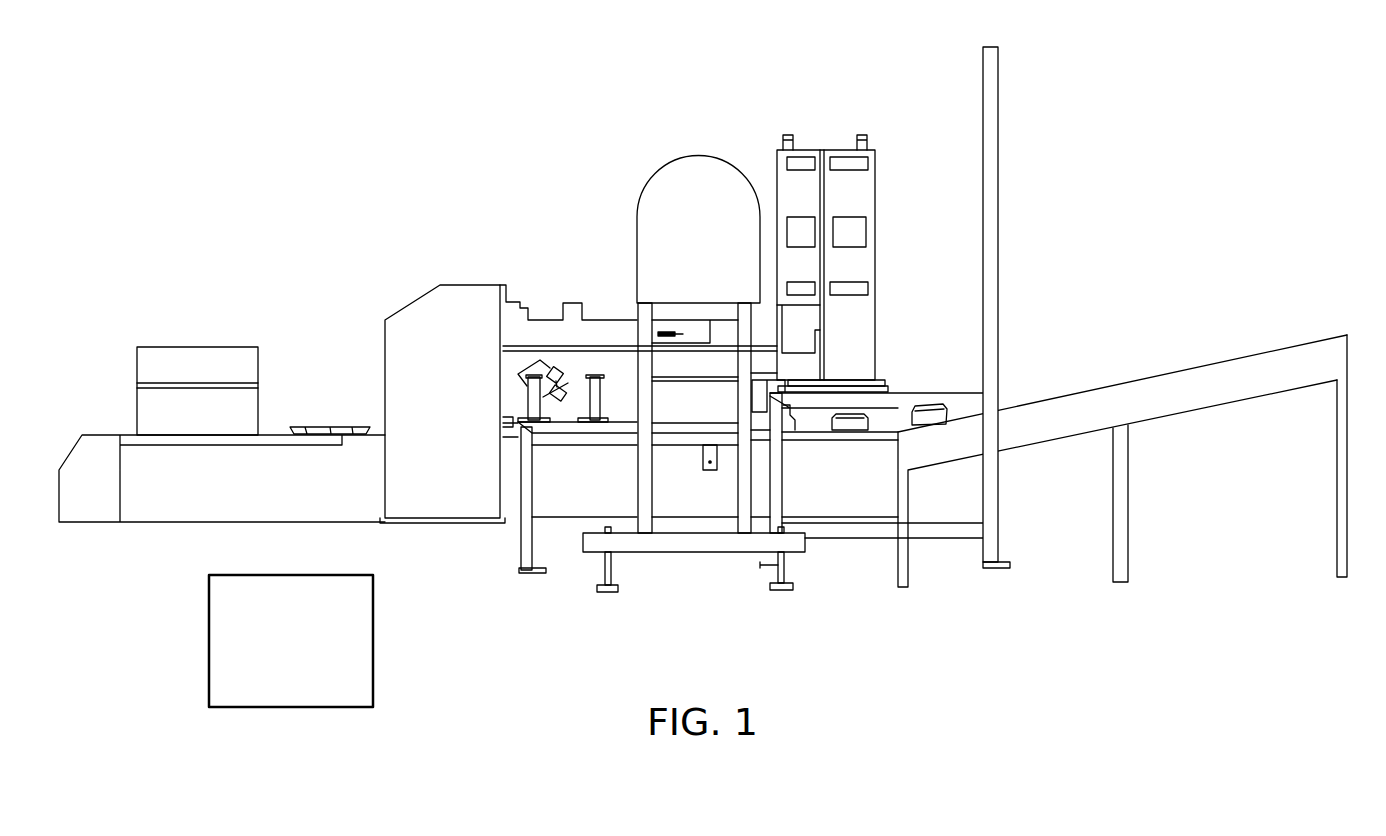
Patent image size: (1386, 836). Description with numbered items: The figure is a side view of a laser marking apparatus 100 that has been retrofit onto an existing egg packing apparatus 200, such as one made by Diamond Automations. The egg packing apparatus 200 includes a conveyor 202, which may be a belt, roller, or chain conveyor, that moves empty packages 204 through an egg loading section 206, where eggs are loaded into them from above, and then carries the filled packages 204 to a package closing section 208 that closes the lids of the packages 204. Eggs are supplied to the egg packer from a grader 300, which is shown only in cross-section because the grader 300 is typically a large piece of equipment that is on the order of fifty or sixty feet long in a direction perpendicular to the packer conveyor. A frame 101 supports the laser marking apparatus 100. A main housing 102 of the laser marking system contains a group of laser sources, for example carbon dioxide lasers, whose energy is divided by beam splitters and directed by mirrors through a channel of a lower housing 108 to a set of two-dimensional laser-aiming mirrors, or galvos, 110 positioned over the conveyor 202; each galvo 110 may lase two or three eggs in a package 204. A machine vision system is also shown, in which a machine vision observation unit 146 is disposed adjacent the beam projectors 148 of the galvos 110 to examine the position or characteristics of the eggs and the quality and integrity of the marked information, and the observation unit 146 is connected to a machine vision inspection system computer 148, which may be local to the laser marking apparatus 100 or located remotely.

The laser marking apparatus 100 is at (855, 227).
The frame 101 is at (999, 324).
The main housing 102 is at (862, 322).
The lower housing 108 is at (610, 358).
The two-dimensional laser-aiming mirrors (galvos) 110 is at (552, 371).
The machine vision observation unit 146 is at (552, 398).
The machine vision inspection system computer 148 is at (567, 388).
The egg packing apparatus 200 is at (493, 442).
The conveyor 202 is at (281, 431).
The package 204 is at (333, 431).
The egg loading section 206 is at (467, 391).
The package closing section 208 is at (715, 416).
The grader 300 is at (720, 246).